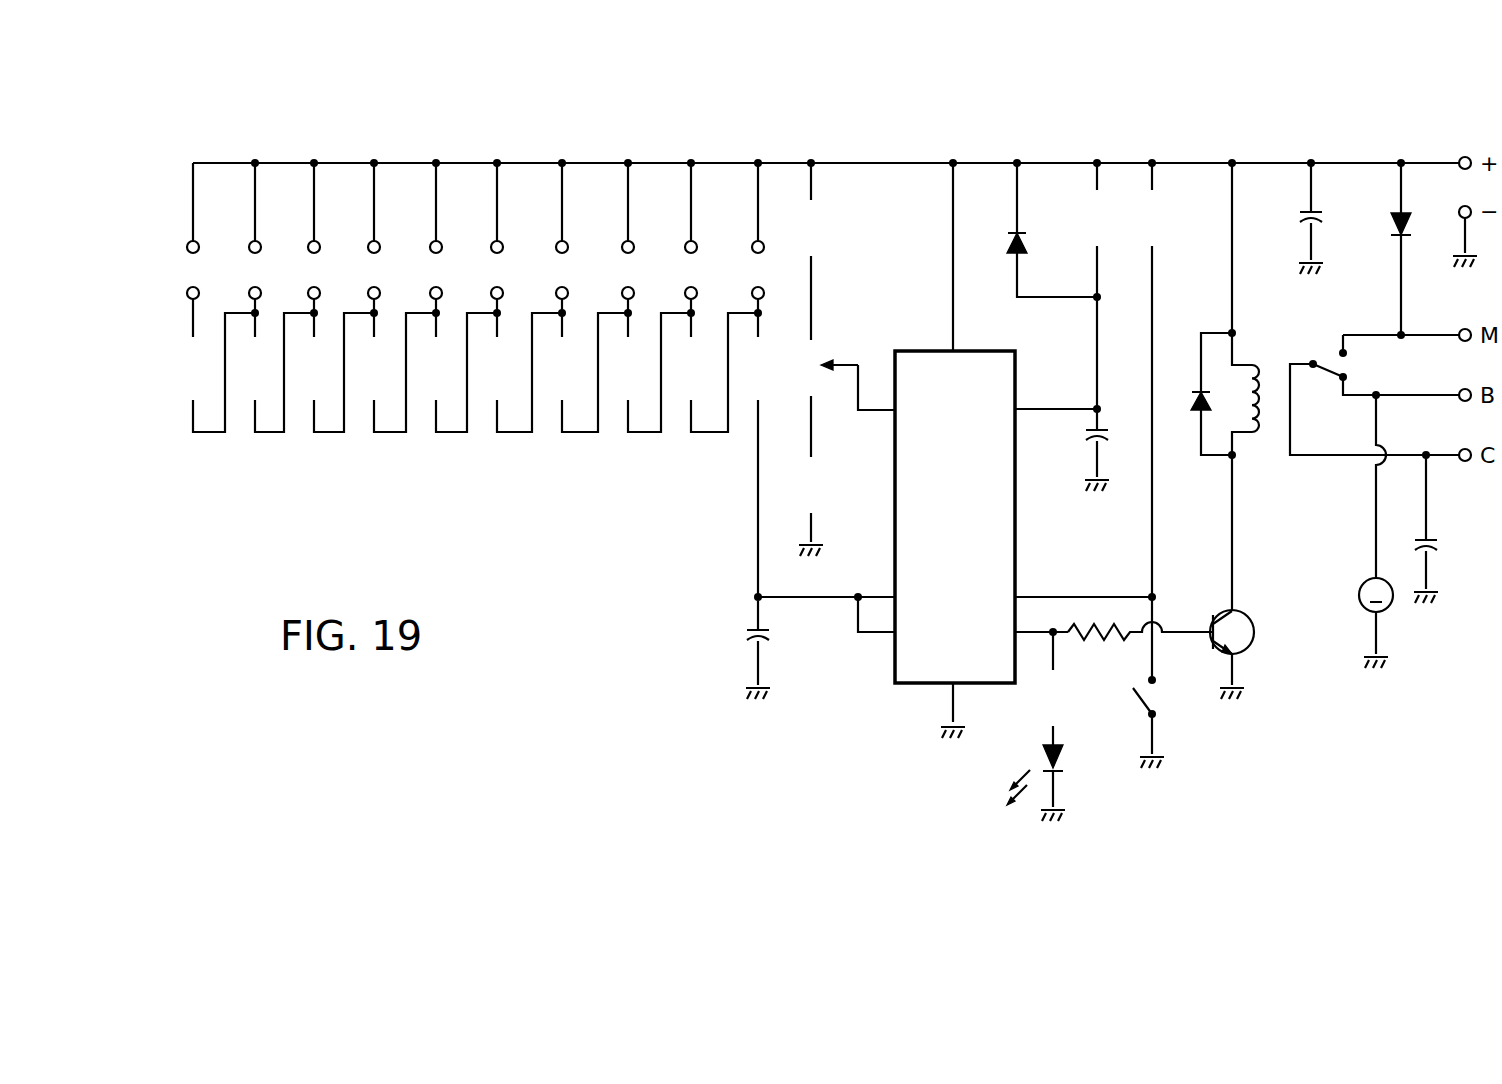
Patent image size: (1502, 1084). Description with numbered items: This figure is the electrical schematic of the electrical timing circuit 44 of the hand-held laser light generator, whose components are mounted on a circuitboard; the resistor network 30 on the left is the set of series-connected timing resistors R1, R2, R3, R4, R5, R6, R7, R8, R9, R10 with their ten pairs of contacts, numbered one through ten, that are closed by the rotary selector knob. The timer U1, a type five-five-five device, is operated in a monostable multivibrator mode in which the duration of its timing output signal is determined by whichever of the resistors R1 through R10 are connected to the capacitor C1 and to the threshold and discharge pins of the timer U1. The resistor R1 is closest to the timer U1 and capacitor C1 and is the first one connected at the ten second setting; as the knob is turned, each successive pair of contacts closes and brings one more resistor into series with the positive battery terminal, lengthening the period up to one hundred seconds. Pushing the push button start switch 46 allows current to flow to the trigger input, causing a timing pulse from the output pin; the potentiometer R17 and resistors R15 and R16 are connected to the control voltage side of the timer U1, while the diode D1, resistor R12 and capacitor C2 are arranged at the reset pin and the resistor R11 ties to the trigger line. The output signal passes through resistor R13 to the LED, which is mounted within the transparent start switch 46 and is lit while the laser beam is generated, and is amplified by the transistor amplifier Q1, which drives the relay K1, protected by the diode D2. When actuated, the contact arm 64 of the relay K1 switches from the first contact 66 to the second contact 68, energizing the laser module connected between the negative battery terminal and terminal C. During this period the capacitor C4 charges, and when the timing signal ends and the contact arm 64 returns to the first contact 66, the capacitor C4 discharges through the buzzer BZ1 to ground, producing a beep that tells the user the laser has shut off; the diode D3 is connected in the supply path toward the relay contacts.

The resistor network / selector switch 30 is at (632, 118).
The electrical timing circuit 44 is at (1200, 155).
The start switch 46 is at (1148, 700).
The contact arm 64 is at (1328, 372).
The first contact 66 is at (1352, 378).
The second contact 68 is at (1350, 355).
The resistor R1 is at (751, 358).
The resistor R2 is at (684, 358).
The resistor R3 is at (620, 358).
The resistor R4 is at (553, 358).
The resistor R5 is at (490, 358).
The resistor R6 is at (430, 358).
The resistor R7 is at (367, 358).
The resistor R8 is at (307, 358).
The resistor R9 is at (248, 358).
The resistor R10 is at (186, 358).
The resistor R11 is at (1157, 224).
The resistor R12 is at (1093, 222).
The resistor R13 is at (1062, 708).
The resistor R15 is at (823, 225).
The resistor R16 is at (820, 497).
The potentiometer R17 is at (816, 346).
The capacitor C1 is at (743, 650).
The capacitor C2 is at (1110, 450).
The capacitor C4 is at (1442, 529).
The diode D1 is at (1054, 230).
The diode D2 is at (1196, 394).
The diode D3 is at (1417, 249).
The timer U1 is at (953, 448).
The relay K1 is at (1266, 356).
The transistor amplifier Q1 is at (1249, 620).
The buzzer BZ1 is at (1358, 600).
The L.E.D. LED is at (1063, 760).